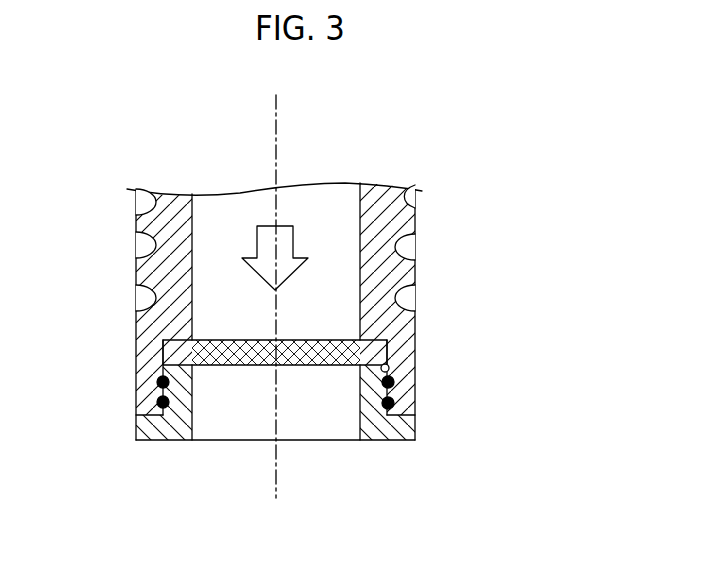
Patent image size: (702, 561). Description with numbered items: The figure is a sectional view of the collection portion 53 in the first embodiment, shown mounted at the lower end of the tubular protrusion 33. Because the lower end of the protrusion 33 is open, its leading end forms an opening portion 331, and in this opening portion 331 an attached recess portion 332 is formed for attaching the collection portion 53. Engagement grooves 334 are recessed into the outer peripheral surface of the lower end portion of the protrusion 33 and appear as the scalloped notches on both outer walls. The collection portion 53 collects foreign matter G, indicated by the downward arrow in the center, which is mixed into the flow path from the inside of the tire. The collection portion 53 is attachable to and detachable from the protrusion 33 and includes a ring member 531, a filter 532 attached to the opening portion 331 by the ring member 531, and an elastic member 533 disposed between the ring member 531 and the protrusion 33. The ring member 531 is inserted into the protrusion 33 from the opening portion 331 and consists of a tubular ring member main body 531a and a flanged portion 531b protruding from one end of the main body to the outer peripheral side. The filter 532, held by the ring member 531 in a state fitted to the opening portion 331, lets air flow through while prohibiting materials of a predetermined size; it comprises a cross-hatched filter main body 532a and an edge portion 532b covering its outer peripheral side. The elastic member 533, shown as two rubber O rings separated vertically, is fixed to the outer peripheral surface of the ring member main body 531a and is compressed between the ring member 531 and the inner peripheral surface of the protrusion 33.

The protrusion 33 is at (377, 196).
The opening portion 331 is at (231, 443).
The attached recess portion 332 is at (390, 365).
The engagement grooves 334 is at (416, 246).
The collection portion 53 is at (339, 394).
The ring member 531 is at (368, 390).
The ring member main body 531a is at (392, 393).
The flanged portion 531b is at (400, 431).
The filter 532 is at (386, 310).
The filter main body 532a is at (330, 341).
The edge portion 532b is at (378, 342).
The elastic member 533 is at (157, 382).
The foreign matter G is at (336, 241).